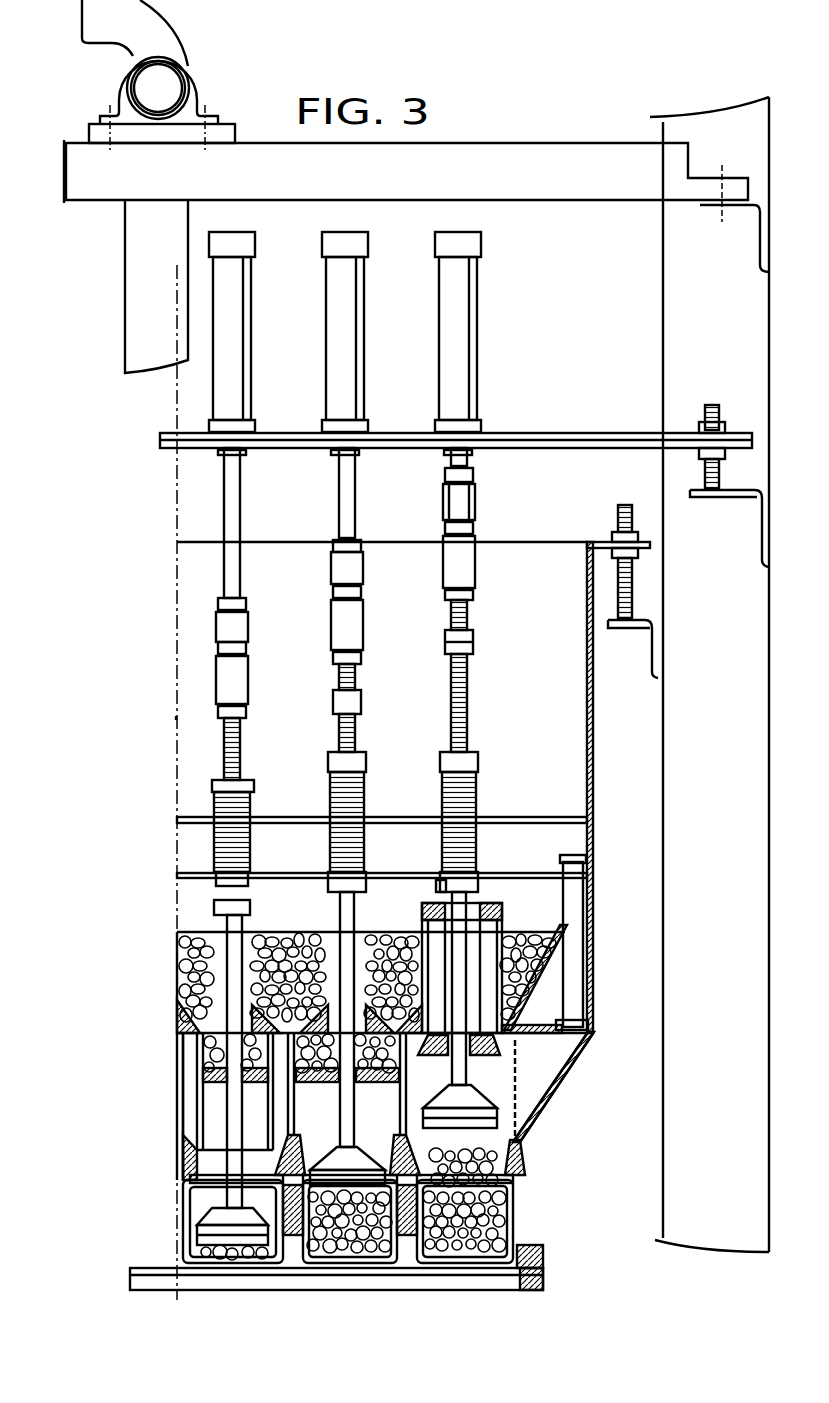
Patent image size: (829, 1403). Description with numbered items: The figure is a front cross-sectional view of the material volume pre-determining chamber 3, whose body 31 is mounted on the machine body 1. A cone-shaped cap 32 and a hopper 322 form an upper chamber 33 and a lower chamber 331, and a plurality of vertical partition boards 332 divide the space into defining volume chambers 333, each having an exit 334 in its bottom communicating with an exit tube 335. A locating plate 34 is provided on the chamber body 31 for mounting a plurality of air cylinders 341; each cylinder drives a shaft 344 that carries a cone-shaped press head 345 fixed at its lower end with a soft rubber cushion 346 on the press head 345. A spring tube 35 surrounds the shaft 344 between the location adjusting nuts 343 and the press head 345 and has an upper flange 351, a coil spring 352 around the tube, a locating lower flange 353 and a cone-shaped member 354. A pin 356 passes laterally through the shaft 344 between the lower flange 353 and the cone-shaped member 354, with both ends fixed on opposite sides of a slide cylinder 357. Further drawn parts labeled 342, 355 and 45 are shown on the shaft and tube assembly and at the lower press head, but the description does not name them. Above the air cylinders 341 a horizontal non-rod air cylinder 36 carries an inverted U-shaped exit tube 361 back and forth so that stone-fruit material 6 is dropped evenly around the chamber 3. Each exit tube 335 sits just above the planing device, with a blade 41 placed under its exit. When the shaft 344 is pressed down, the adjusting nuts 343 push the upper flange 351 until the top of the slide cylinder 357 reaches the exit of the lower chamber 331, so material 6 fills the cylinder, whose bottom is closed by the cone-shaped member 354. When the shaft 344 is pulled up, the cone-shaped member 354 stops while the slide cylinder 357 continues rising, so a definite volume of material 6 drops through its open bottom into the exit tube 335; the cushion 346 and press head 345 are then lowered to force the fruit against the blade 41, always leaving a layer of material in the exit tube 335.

The machine body 1 is at (732, 1240).
The material volume pre-determining chamber 3 is at (176, 716).
The material 6 is at (185, 946).
The body 31 is at (597, 792).
The cone-shaped cap 32 is at (570, 810).
The upper chamber 33 is at (548, 792).
The locating plate 34 is at (565, 443).
The spring tube 35 is at (467, 812).
The non-rod air cylinder 36 is at (532, 155).
The blade 41 is at (543, 1265).
The valve head 45 is at (228, 1228).
The hopper 322 is at (560, 962).
The lower chamber 331 is at (548, 958).
The vertical partition boards 332 is at (177, 1070).
The defining volume chambers 333 is at (515, 1140).
The exit 334 is at (210, 1160).
The exit tube 335 is at (208, 1192).
The air cylinder 341 is at (470, 360).
The coupling 342 is at (462, 512).
The location adjusting nuts 343 is at (470, 647).
The shaft 344 is at (455, 742).
The cone-shaped press head 345 is at (505, 1158).
The soft rubber cushion 346 is at (515, 1200).
The upper flange 351 is at (480, 762).
The coil spring 352 is at (440, 792).
The locating lower flange 353 is at (585, 898).
The cone-shaped member 354 is at (520, 1068).
The support post 355 is at (516, 1040).
The pin 356 is at (437, 882).
The slide cylinder 357 is at (440, 912).
The inverted U-shaped exit tube 361 is at (143, 297).